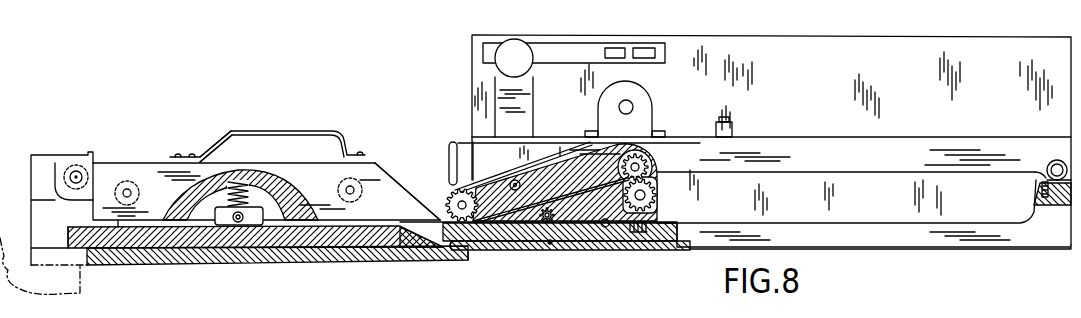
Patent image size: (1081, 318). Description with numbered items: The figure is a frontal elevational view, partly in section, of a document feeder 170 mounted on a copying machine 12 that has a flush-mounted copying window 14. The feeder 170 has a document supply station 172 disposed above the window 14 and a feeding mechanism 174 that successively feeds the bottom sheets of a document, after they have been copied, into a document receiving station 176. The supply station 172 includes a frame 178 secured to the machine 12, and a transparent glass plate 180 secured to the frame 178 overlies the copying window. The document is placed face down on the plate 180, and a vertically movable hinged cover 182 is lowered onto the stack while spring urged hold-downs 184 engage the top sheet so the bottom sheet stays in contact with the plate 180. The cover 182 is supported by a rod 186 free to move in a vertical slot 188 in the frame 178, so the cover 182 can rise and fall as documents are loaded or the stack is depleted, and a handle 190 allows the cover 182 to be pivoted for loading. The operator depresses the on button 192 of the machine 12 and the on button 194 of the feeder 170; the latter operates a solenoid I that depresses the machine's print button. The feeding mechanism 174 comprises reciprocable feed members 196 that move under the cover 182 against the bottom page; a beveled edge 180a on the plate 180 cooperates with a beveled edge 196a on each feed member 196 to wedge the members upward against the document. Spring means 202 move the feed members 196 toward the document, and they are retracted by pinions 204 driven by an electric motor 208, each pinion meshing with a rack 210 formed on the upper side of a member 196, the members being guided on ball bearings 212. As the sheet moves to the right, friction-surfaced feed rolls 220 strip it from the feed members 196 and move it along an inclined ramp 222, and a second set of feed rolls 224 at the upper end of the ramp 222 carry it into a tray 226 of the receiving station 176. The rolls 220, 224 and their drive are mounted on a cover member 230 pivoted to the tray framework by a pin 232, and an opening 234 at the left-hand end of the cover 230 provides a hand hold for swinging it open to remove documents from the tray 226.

The copying window 14 is at (362, 272).
The copying machine 12 is at (743, 41).
The solenoid I is at (521, 50).
The feeder 170 is at (373, 135).
The document supply station 172 is at (232, 155).
The feeding mechanism 174 is at (436, 156).
The document receiving station 176 is at (960, 76).
The frame 178 is at (41, 153).
The transparent glass plate 180 is at (255, 147).
The beveled edge 180a is at (435, 244).
The hinged cover 182 is at (157, 168).
The spring urged hold-downs 184 is at (258, 216).
The rod 186 is at (79, 171).
The vertical slot 188 is at (73, 165).
The handle 190 is at (333, 131).
The on button 192 is at (618, 48).
The on button 194 is at (730, 119).
The reciprocable feed members 196 is at (518, 236).
The beveled edge 196a is at (453, 248).
The spring means 202 is at (660, 224).
The pinions 204 is at (545, 200).
The electric motor 208 is at (651, 116).
The rack 210 is at (592, 246).
The ball bearings 212 is at (558, 247).
The feed rolls 220 is at (447, 198).
The inclined ramp 222 is at (518, 172).
The second set of feed rolls 224 is at (650, 168).
The tray 226 is at (868, 222).
The cover member 230 is at (980, 145).
The pin 232 is at (1043, 178).
The opening 234 is at (456, 150).